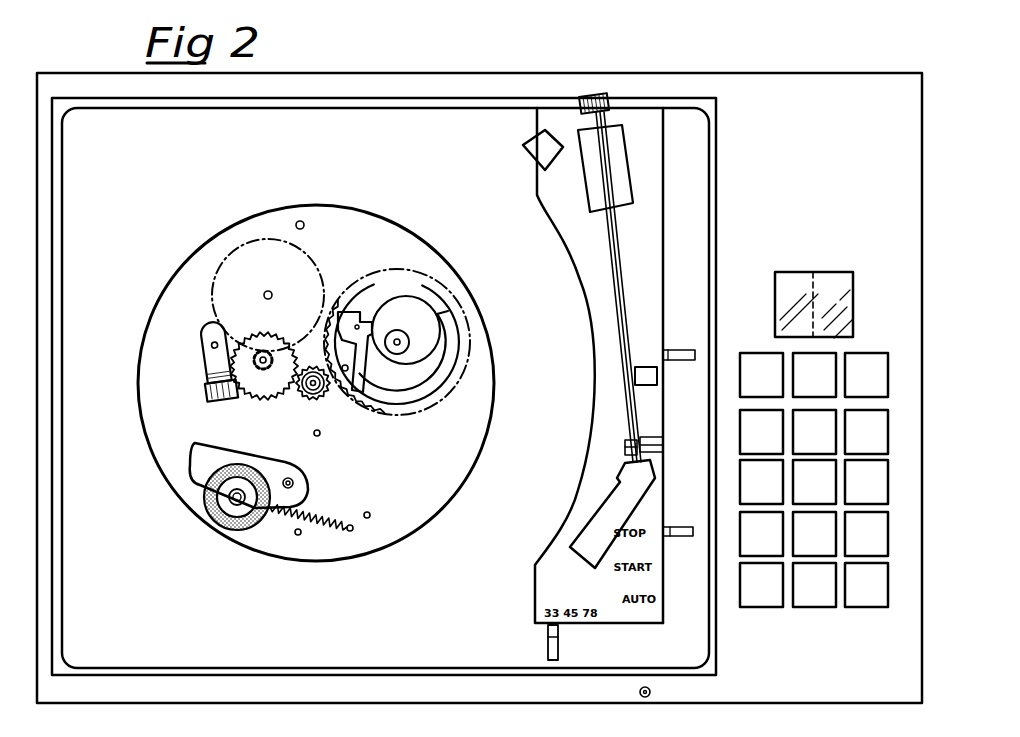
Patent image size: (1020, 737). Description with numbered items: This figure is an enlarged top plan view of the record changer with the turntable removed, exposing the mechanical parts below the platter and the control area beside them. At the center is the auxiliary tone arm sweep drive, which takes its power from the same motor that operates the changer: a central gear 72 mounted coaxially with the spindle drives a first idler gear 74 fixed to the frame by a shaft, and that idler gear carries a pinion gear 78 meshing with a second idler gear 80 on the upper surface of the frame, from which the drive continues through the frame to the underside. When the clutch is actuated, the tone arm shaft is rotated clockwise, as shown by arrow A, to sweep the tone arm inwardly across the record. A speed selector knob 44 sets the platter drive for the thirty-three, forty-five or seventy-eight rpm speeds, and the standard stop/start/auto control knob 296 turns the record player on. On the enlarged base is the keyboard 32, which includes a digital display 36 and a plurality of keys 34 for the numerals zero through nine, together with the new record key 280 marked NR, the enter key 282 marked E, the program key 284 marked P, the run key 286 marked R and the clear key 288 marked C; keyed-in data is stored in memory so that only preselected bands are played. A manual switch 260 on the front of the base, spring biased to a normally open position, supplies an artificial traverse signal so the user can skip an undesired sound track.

The keyboard 32 is at (820, 492).
The keys 34 is at (886, 432).
The digital display 36 is at (795, 272).
The selector knob 44 is at (548, 643).
The central gear 72 is at (312, 400).
The first idler gear 74 is at (267, 396).
The pinion gear 78 is at (262, 368).
The second idler gear 80 is at (232, 297).
The manual switch 260 is at (646, 698).
The new record key 280 is at (755, 607).
The enter key 282 is at (758, 358).
The program key 284 is at (875, 358).
The run key 286 is at (832, 616).
The clear key 288 is at (823, 355).
The stop/start/auto control knob 296 is at (681, 524).
The arrow A is at (643, 340).